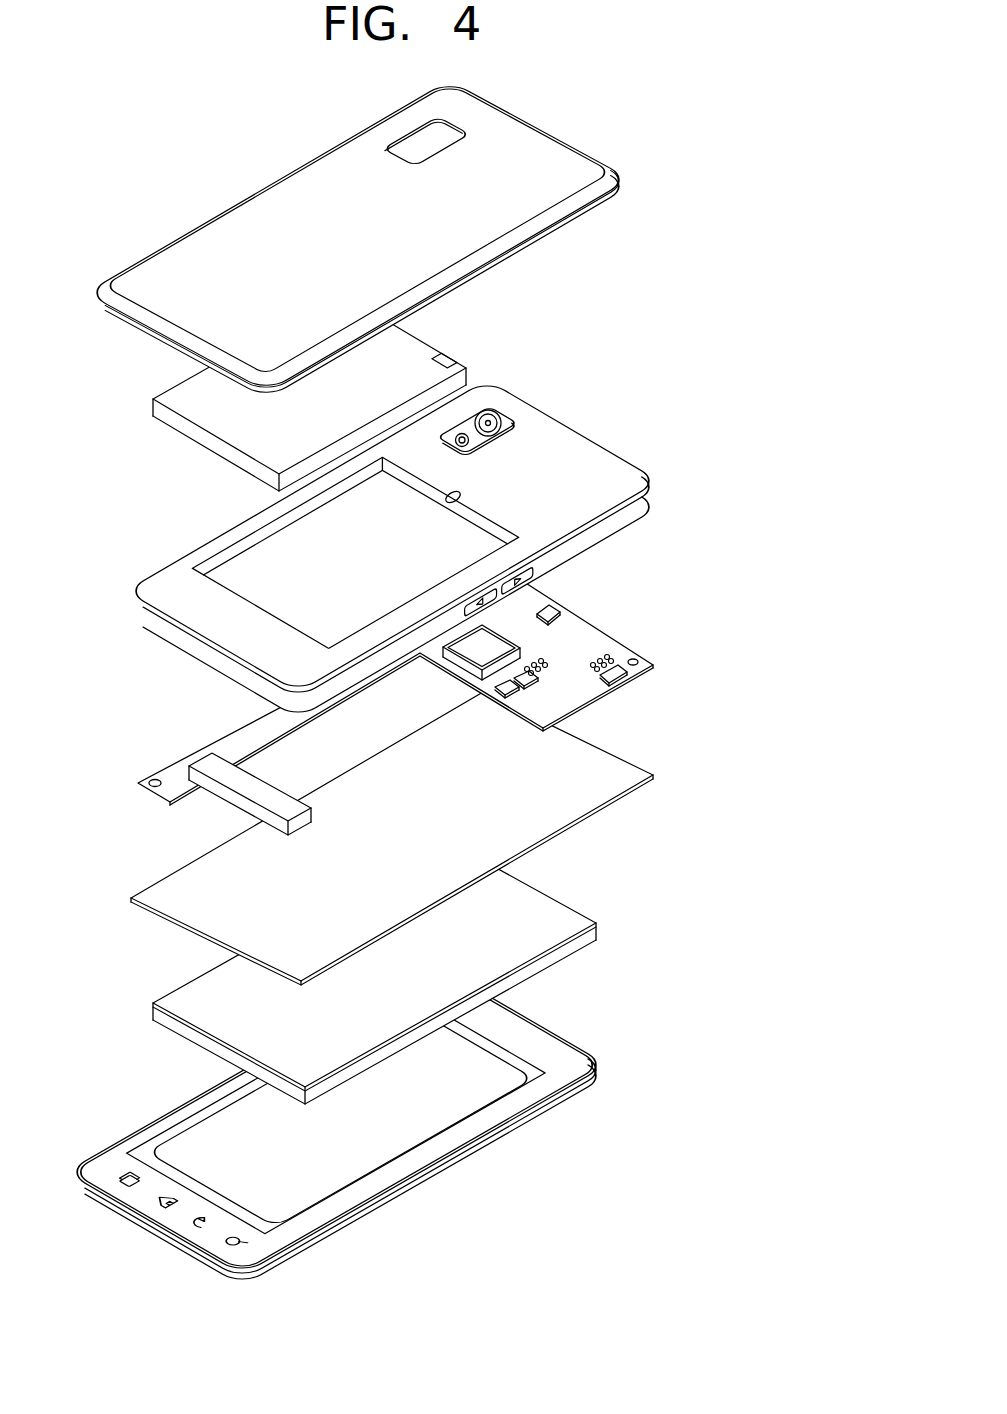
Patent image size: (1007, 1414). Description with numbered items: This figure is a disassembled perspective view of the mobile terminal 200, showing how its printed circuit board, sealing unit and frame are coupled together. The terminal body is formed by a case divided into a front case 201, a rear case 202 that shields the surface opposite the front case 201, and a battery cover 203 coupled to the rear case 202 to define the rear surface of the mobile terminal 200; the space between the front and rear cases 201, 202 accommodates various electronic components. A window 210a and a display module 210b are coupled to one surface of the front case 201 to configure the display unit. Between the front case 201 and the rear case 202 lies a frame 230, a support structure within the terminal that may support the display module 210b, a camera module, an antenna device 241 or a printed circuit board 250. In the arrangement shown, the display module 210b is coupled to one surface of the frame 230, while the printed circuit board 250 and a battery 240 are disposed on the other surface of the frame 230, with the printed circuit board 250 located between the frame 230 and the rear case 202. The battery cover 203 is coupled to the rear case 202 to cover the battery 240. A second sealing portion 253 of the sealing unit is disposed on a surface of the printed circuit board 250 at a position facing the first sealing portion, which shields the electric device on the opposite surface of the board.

The mobile terminal 200 is at (692, 255).
The front case 201 is at (559, 1060).
The rear case 202 is at (583, 450).
The battery cover 203 is at (527, 143).
The window 210a is at (425, 1142).
The display module 210b is at (560, 913).
The frame 230 is at (633, 737).
The battery 240 is at (209, 436).
The antenna device 241 is at (231, 795).
The printed circuit board 250 is at (617, 648).
The second sealing portion 253 is at (510, 640).